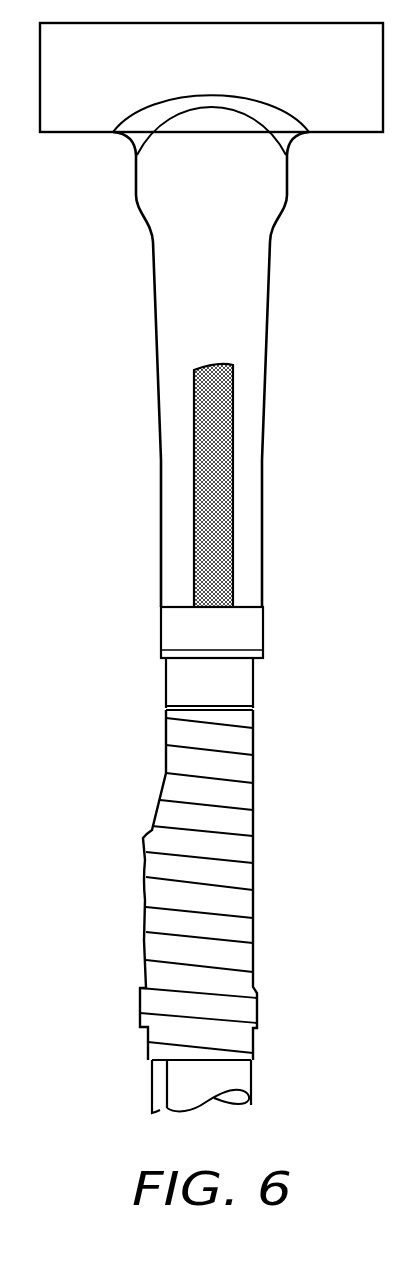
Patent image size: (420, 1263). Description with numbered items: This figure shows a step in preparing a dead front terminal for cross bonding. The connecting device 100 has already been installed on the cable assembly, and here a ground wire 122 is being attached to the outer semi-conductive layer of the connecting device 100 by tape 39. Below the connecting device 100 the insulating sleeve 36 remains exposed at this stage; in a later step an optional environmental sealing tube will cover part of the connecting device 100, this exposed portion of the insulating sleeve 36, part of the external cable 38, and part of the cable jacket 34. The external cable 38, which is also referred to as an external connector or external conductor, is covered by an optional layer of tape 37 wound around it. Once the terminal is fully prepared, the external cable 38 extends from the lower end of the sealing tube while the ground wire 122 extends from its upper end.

The connecting device 100 is at (253, 326).
The ground wire 122 is at (217, 492).
The tape 39 is at (243, 630).
The insulating sleeve 36 is at (182, 679).
The layer of tape 37 is at (160, 837).
The external cable 38 is at (160, 1085).
The cable jacket 34 is at (232, 1072).